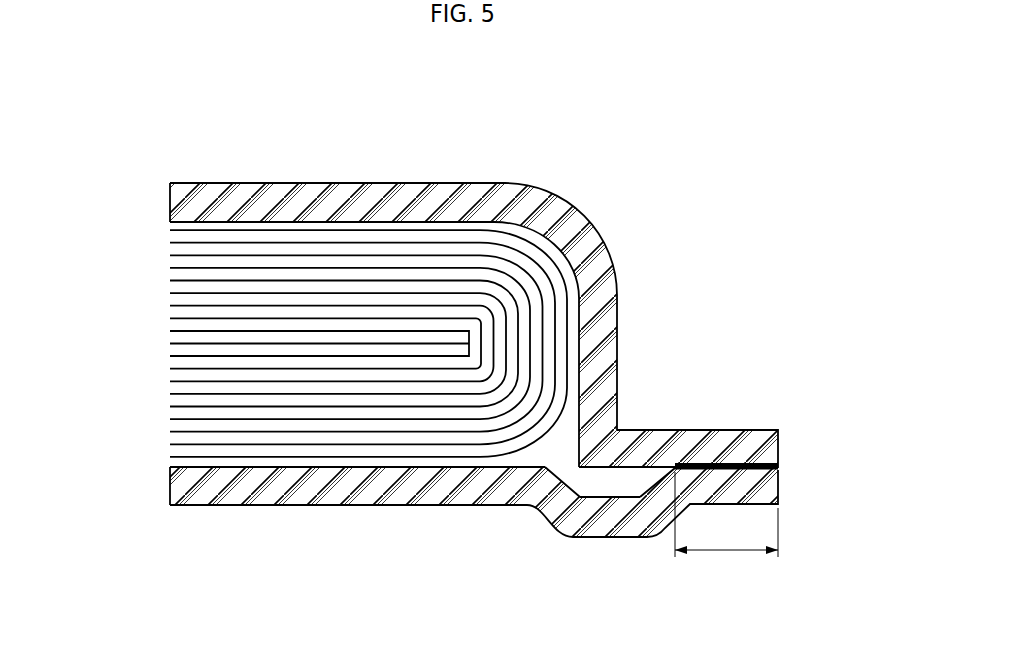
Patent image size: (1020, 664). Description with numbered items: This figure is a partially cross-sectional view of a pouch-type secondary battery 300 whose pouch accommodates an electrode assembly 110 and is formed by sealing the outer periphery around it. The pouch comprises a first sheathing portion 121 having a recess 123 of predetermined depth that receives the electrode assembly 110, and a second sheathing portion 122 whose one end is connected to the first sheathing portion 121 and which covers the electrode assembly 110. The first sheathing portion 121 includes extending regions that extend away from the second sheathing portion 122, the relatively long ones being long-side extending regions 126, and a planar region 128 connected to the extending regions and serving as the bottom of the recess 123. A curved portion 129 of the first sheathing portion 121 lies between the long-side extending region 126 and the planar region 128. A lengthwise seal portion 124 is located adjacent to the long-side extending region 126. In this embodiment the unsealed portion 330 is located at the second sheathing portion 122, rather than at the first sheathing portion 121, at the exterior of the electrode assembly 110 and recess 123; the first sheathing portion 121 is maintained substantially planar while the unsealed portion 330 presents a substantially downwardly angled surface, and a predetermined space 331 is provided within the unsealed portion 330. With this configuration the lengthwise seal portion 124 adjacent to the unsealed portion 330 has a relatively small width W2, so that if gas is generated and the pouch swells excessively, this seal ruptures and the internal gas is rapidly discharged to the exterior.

The secondary battery 300 is at (463, 348).
The electrode assembly 110 is at (307, 343).
The first sheathing portion 121 is at (490, 369).
The second sheathing portion 122 is at (380, 503).
The recess 123 is at (563, 445).
The lengthwise seal portion 124 is at (778, 467).
The long-side extending region 126 is at (613, 342).
The planar region 128 is at (340, 192).
The curved portion 129 is at (578, 228).
The unsealed portion 330 is at (628, 543).
The space 331 is at (598, 485).
The width W2 is at (726, 514).